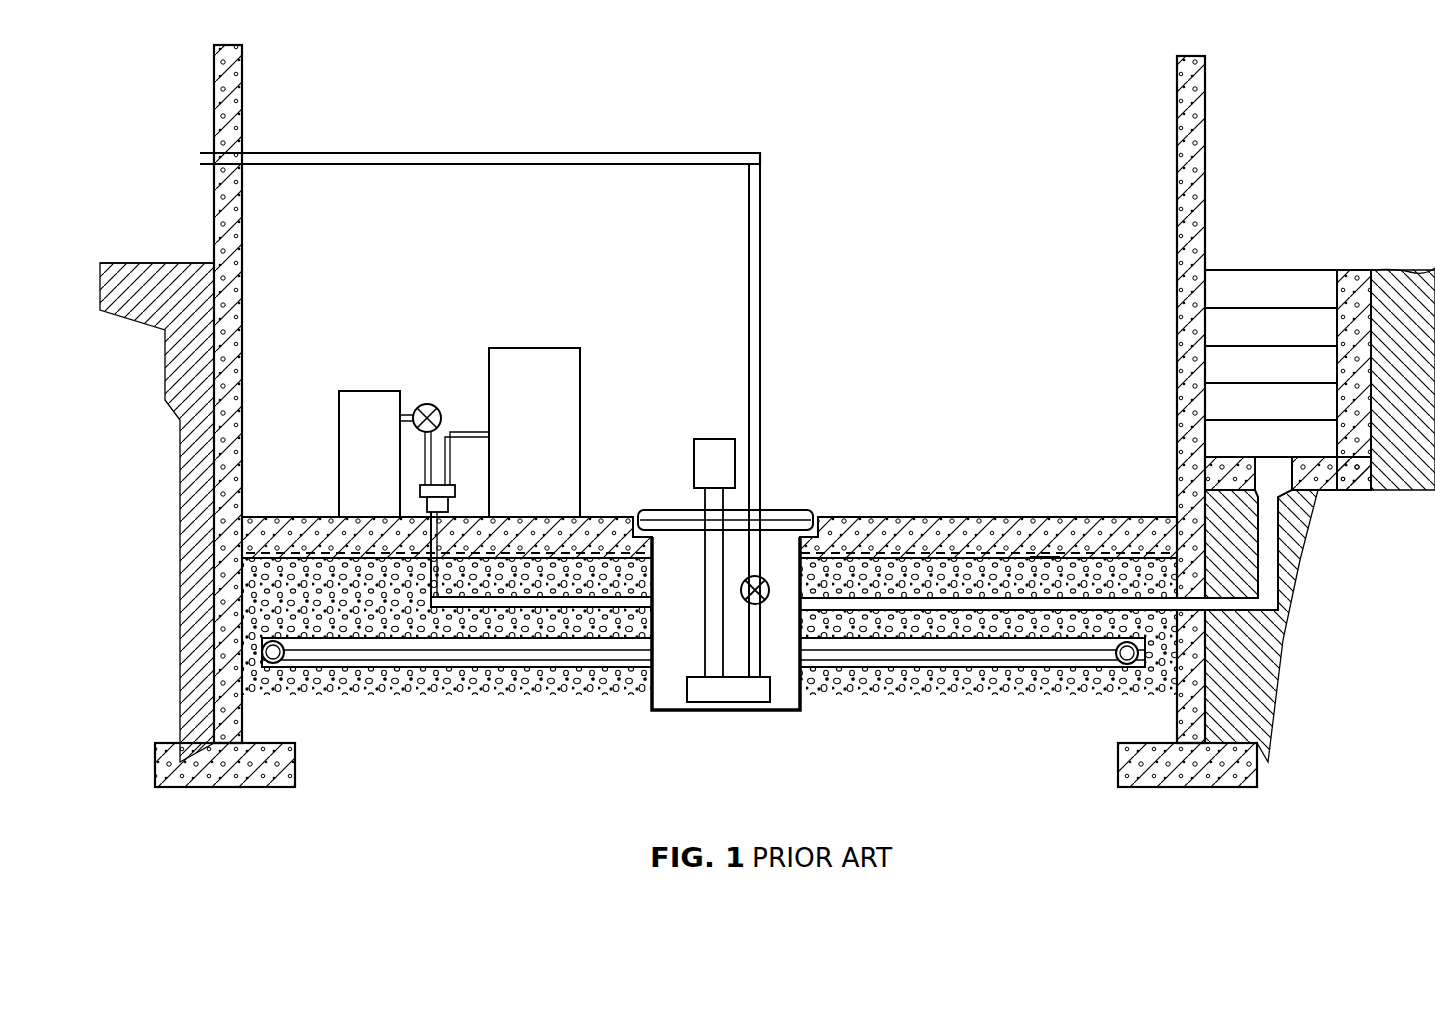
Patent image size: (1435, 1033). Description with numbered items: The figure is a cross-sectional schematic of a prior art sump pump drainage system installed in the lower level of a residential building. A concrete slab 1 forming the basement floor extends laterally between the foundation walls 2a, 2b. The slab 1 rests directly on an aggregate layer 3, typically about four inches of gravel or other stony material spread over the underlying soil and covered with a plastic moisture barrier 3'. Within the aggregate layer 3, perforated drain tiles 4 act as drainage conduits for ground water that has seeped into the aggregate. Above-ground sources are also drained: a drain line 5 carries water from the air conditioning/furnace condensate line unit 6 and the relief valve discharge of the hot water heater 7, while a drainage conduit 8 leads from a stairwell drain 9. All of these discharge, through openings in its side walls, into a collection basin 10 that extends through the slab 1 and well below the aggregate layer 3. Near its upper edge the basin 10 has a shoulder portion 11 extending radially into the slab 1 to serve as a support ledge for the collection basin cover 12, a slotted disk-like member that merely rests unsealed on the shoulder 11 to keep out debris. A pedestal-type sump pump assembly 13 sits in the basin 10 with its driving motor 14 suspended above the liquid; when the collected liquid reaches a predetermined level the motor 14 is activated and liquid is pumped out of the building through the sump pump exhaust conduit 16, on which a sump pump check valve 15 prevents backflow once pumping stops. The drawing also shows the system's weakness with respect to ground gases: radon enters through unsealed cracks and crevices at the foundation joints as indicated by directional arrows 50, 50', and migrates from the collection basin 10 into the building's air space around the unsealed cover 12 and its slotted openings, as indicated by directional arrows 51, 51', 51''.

The concrete slab 1 is at (953, 520).
The foundation wall 2a is at (242, 103).
The foundation wall 2b is at (1177, 103).
The aggregate layer 3 is at (710, 513).
The plastic moisture barrier 3' is at (1046, 641).
The perforated drain tile 4 is at (327, 640).
The drain line 5 is at (605, 597).
The air conditioning/furnace condensate line unit 6 is at (530, 365).
The hot water heater 7 is at (372, 412).
The drainage conduit 8 is at (978, 603).
The stairwell drain 9 is at (1280, 468).
The collection basin 10 is at (800, 580).
The shoulder portion 11 is at (800, 521).
The collection basin cover 12 is at (737, 513).
The sump pump assembly 13 is at (716, 432).
The driving motor 14 is at (710, 470).
The sump pump check valve 15 is at (763, 606).
The sump pump exhaust conduit 16 is at (490, 152).
The directional arrow 50 is at (262, 441).
The directional arrow 50' is at (1125, 487).
The directional arrow 51 is at (667, 505).
The directional arrow 51' is at (649, 663).
The directional arrow 51'' is at (818, 501).